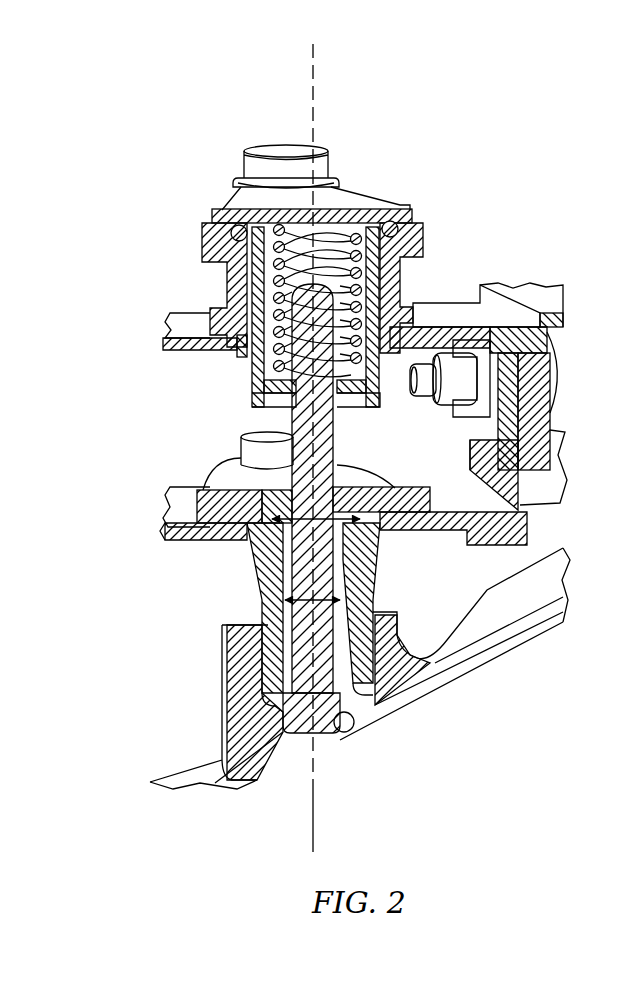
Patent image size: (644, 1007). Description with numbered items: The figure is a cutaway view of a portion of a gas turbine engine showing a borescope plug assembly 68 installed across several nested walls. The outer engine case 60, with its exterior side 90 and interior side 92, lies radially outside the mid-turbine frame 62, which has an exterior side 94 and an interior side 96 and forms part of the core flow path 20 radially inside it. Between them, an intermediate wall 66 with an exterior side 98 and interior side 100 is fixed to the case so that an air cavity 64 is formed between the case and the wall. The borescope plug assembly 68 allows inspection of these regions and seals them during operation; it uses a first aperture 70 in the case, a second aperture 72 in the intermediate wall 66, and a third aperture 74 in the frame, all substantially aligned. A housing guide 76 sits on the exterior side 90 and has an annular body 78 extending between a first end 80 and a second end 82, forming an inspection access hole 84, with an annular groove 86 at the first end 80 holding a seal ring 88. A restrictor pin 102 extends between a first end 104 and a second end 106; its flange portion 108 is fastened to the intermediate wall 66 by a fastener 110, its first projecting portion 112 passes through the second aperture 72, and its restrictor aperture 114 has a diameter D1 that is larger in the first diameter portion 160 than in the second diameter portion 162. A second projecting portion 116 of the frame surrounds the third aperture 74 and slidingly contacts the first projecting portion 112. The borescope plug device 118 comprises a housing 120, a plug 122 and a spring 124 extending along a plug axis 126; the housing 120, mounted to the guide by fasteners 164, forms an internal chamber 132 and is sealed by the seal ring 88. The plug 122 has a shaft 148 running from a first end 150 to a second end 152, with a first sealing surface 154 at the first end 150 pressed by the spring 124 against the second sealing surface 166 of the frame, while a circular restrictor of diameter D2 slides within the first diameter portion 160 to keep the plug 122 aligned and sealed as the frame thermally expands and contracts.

The core flow path 20 is at (470, 796).
The outer engine case 60 is at (551, 275).
The mid-turbine frame 62 is at (522, 655).
The air cavity 64 is at (458, 466).
The intermediate wall 66 is at (188, 552).
The borescope plug assembly 68 is at (533, 137).
The first aperture 70 is at (228, 358).
The second aperture 72 is at (242, 548).
The third aperture 74 is at (322, 753).
The housing guide 76 is at (434, 220).
The annular body 78 is at (412, 255).
The first end 80 is at (416, 208).
The second end 82 is at (241, 366).
The inspection access hole 84 is at (250, 314).
The annular groove 86 is at (408, 232).
The seal ring 88 is at (230, 229).
The exterior side 90 is at (166, 323).
The interior side 92 is at (178, 348).
The exterior side 94 is at (566, 556).
The interior side 96 is at (474, 668).
The exterior side 98 is at (168, 497).
The interior side 100 is at (176, 535).
The restrictor pin 102 is at (440, 490).
The first end 104 is at (488, 424).
The second end 106 is at (268, 706).
The flange portion 108 is at (218, 484).
The fastener 110 is at (243, 440).
The first projecting portion 112 is at (366, 598).
The restrictor aperture 114 is at (358, 564).
The second projecting portion 116 is at (220, 681).
The borescope plug device 118 is at (368, 182).
The housing 120 is at (222, 207).
The plug 122 is at (322, 290).
The spring 124 is at (268, 217).
The plug axis 126 is at (322, 62).
The internal chamber 132 is at (378, 290).
The shaft 148 is at (386, 705).
The first end 150 is at (302, 738).
The second end 152 is at (257, 275).
The first sealing surface 154 is at (274, 725).
The first diameter portion 160 is at (500, 527).
The second diameter portion 162 is at (286, 641).
The fastener 164 is at (283, 148).
The second sealing surface 166 is at (340, 742).
The diameter of the restrictor aperture D1 is at (281, 600).
The diameter of the circular restrictor D2 is at (388, 460).